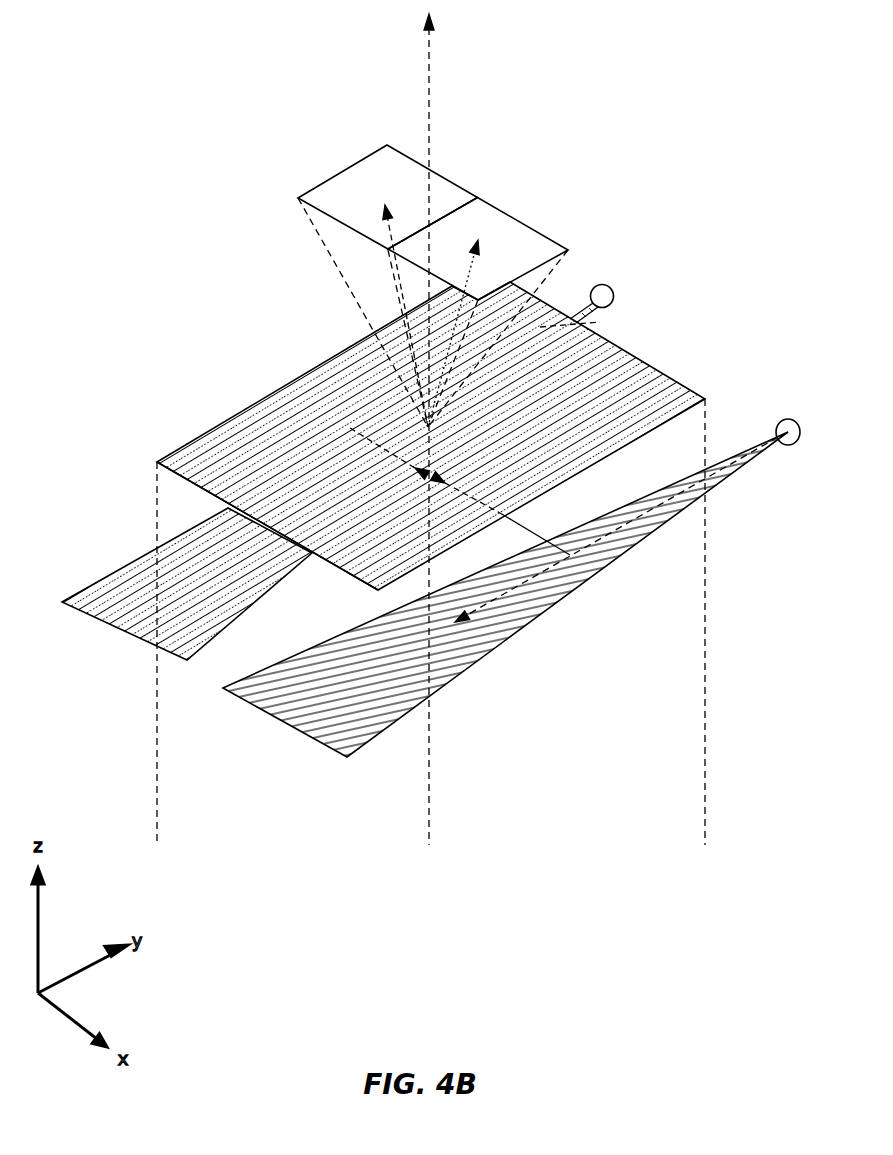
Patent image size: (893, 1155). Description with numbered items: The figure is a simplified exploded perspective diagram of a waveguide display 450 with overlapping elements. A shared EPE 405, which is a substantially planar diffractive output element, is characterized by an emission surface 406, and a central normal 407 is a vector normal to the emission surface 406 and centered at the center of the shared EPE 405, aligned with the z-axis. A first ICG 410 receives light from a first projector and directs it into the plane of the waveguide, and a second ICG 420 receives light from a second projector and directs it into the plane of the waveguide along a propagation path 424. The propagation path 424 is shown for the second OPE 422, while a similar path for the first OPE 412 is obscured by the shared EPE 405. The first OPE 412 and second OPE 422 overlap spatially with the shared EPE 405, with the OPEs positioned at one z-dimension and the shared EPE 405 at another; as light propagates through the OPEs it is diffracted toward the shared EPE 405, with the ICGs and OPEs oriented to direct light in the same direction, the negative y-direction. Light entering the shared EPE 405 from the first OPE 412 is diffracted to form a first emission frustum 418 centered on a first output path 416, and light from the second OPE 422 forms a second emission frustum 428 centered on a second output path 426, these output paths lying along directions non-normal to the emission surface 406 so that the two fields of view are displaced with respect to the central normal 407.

The waveguide display 450 is at (158, 52).
The central normal 407 is at (433, 62).
The second emission frustum 428 is at (364, 191).
The first emission frustum 418 is at (459, 233).
The second output path 426 is at (398, 293).
The first ICG 410 is at (610, 286).
The first output path 416 is at (591, 320).
The second ICG 420 is at (775, 425).
The first OPE 412 is at (117, 572).
The emission surface 406 is at (358, 533).
The shared EPE 405 is at (340, 575).
The propagation path 424 is at (560, 607).
The second OPE 422 is at (390, 720).